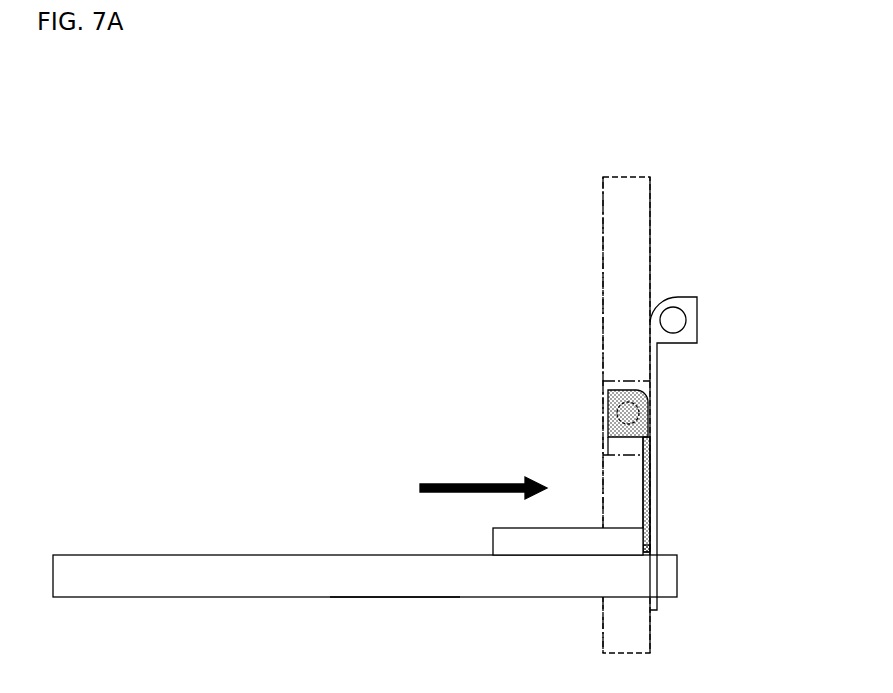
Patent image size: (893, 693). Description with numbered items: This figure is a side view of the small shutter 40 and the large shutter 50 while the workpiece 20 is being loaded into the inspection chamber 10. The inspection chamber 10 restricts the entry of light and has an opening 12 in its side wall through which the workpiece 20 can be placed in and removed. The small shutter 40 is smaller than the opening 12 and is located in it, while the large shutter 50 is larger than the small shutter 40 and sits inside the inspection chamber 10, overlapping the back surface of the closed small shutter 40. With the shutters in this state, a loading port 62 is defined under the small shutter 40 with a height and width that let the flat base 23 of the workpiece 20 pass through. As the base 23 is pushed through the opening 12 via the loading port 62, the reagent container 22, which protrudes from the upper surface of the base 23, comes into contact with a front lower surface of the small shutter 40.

The inspection chamber 10 is at (759, 549).
The opening 12 is at (610, 487).
The workpiece 20 is at (230, 553).
The reagent container 22 is at (493, 545).
The base 23 is at (395, 598).
The small shutter 40 is at (652, 400).
The large shutter 50 is at (704, 292).
The loading port 62 is at (651, 553).